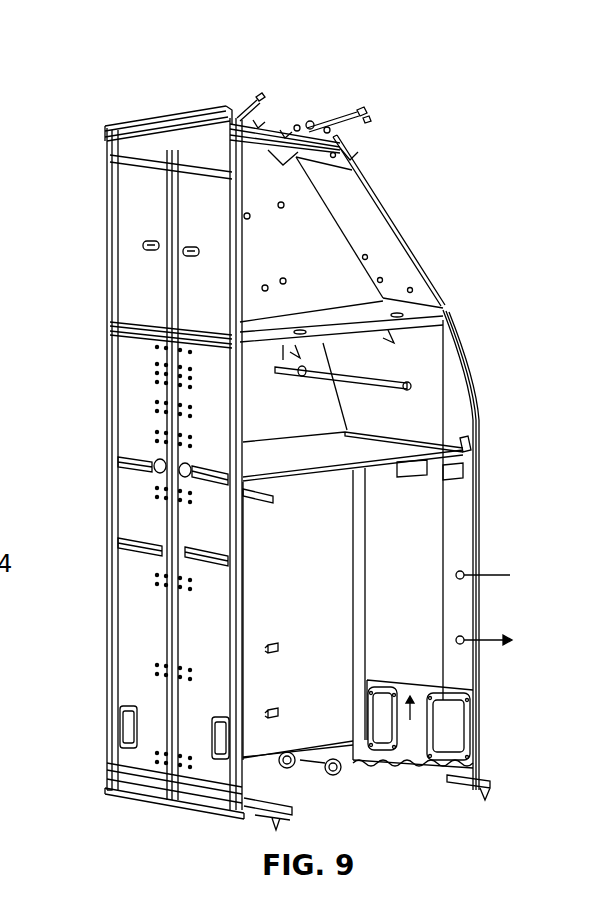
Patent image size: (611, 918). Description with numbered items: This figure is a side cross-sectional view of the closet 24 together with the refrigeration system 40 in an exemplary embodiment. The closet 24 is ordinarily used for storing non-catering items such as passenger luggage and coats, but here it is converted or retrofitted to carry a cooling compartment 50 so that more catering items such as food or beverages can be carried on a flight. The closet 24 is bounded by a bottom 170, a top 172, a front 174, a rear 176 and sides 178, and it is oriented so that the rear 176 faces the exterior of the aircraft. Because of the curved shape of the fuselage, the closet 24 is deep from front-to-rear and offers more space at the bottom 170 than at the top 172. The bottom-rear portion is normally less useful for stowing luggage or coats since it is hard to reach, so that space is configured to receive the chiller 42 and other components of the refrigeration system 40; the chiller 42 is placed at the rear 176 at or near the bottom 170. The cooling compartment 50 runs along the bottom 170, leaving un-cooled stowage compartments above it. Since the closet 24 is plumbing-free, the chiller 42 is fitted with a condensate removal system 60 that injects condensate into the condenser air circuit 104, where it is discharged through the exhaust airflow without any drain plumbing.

The top 172 is at (170, 112).
The closet 24 is at (415, 180).
The sides 178 is at (106, 400).
The front 174 is at (135, 600).
The bottom 170 is at (175, 812).
The rear 176 is at (480, 446).
The chiller 42 is at (430, 510).
The refrigeration system 40 is at (463, 535).
The condenser air circuit 104 is at (493, 548).
The condensate removal system 60 is at (497, 623).
The cooling compartment 50 is at (408, 772).